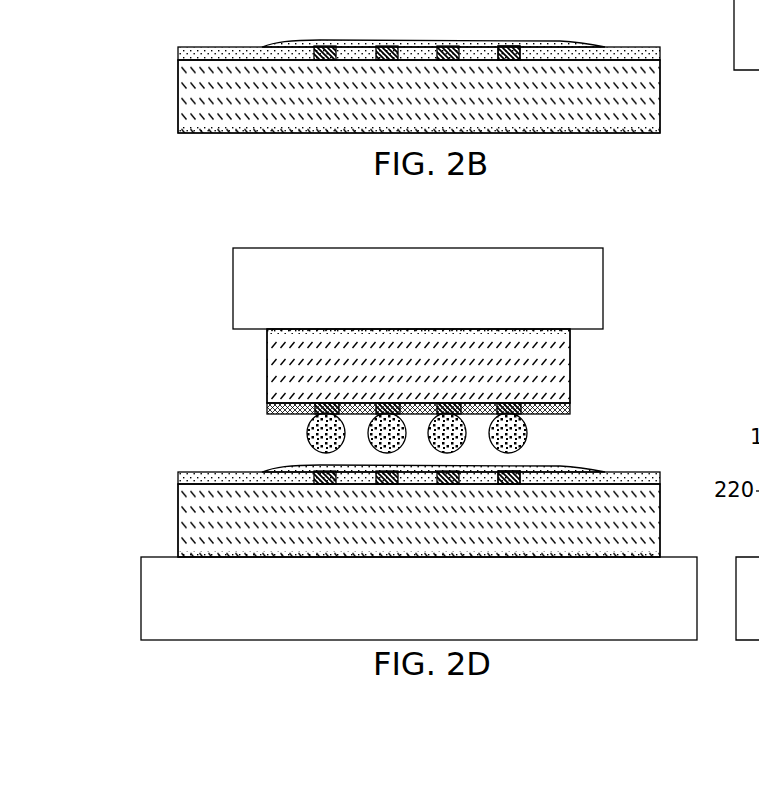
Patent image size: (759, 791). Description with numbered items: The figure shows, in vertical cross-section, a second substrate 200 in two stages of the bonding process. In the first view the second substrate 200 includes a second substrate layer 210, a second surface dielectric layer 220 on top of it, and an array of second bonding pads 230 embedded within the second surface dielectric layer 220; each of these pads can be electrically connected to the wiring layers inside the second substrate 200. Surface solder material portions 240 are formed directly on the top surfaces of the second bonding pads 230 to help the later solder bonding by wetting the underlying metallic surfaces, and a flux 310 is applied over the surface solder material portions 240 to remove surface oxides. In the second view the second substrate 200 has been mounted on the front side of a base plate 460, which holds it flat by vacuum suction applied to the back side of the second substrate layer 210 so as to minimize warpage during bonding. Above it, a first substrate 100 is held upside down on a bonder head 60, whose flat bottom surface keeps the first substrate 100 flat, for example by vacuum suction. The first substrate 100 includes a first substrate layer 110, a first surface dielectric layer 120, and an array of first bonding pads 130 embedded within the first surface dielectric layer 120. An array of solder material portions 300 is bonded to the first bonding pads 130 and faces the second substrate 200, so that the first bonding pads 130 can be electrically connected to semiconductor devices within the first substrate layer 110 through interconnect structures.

In FIG. 2D, the bonder head 60 is at (428, 299).
In FIG. 2D, the first substrate 100 is at (403, 383).
In FIG. 2D, the first substrate layer 110 is at (391, 371).
In FIG. 2D, the first surface dielectric layer 120 is at (265, 409).
In FIG. 2D, the first bonding pads 130 is at (519, 414).
In FIG. 2B, the second substrate 200 is at (430, 77).
In FIG. 2D, the second substrate 200 is at (430, 501).
In FIG. 2B, the second substrate layer 210 is at (446, 108).
In FIG. 2D, the second substrate layer 210 is at (446, 530).
In FIG. 2B, the second surface dielectric layer 220 is at (182, 48).
In FIG. 2D, the second surface dielectric layer 220 is at (182, 472).
In FIG. 2B, the second bonding pads 230 is at (331, 62).
In FIG. 2D, the second bonding pads 230 is at (331, 485).
In FIG. 2B, the surface solder material portions 240 is at (522, 45).
In FIG. 2D, the surface solder material portions 240 is at (522, 468).
In FIG. 2D, the solder material portions 300 is at (527, 434).
In FIG. 2B, the flux 310 is at (468, 34).
In FIG. 2D, the flux 310 is at (468, 459).
In FIG. 2D, the base plate 460 is at (434, 610).